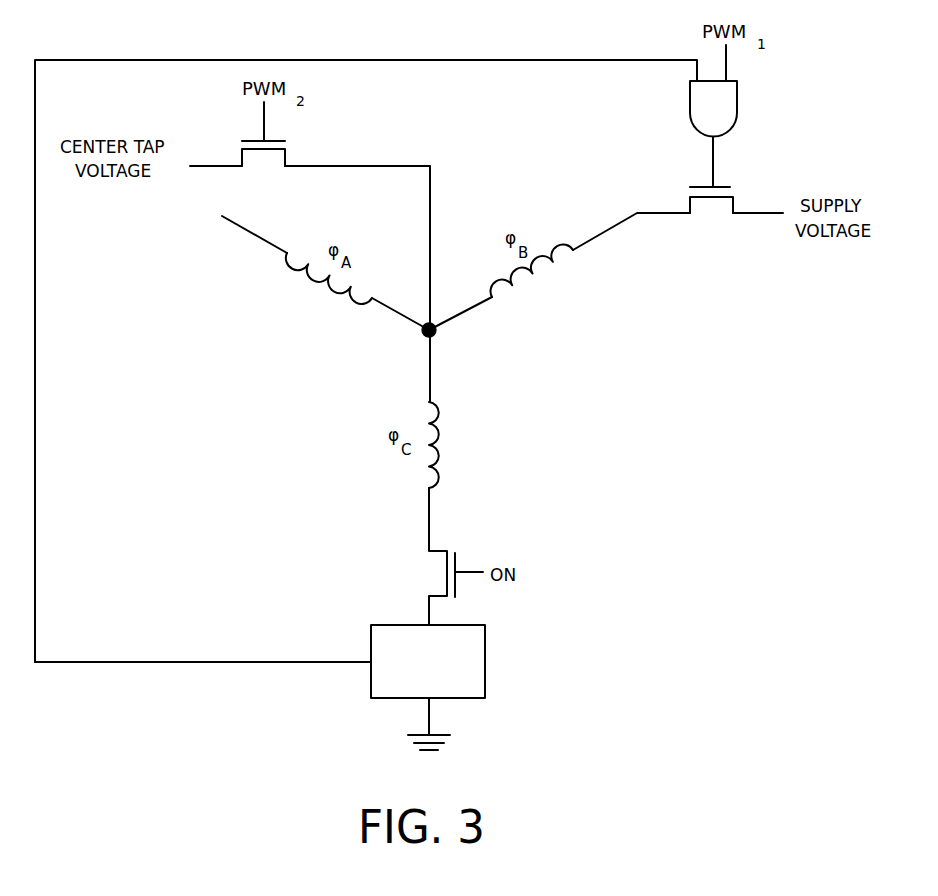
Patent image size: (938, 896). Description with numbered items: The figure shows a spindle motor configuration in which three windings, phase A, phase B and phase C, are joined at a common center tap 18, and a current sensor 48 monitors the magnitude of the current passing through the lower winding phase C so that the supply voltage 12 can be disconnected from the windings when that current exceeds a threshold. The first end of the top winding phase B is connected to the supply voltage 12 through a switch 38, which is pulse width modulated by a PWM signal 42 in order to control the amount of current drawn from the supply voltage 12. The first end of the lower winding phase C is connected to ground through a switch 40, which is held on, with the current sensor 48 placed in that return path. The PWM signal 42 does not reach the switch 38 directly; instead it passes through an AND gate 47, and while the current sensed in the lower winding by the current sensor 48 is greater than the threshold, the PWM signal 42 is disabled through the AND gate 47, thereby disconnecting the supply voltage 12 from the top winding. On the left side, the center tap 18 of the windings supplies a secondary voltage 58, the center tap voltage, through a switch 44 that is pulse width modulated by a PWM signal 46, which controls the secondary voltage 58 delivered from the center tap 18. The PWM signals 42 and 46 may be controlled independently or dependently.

The supply voltage 12 is at (758, 213).
The center tap 18 is at (450, 336).
The switch 38 is at (706, 226).
The switch 40 is at (459, 536).
The PWM signal 42 is at (713, 153).
The switch 44 is at (263, 176).
The PWM signal 46 is at (264, 117).
The AND gate 47 is at (690, 97).
The current sensor 48 is at (486, 662).
The secondary voltage 58 is at (199, 167).